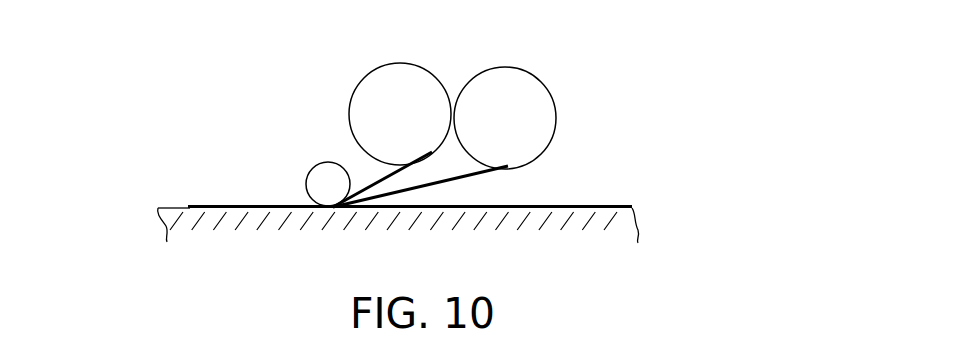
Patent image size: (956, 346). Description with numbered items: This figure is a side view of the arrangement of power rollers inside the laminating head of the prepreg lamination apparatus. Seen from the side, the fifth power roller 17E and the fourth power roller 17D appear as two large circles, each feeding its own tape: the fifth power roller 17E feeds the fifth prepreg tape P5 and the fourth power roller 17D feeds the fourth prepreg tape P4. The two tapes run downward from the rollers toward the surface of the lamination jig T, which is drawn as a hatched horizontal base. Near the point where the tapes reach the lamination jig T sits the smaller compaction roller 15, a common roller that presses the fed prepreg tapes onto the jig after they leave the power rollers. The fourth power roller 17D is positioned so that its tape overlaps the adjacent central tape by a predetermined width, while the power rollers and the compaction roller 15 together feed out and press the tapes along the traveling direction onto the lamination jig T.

The fifth power roller 17E is at (350, 110).
The fourth power roller 17D is at (556, 117).
The compaction roller 15 is at (318, 180).
The fifth prepreg tape P5 is at (373, 181).
The fourth prepreg tape P4 is at (470, 179).
The lamination jig T is at (160, 223).